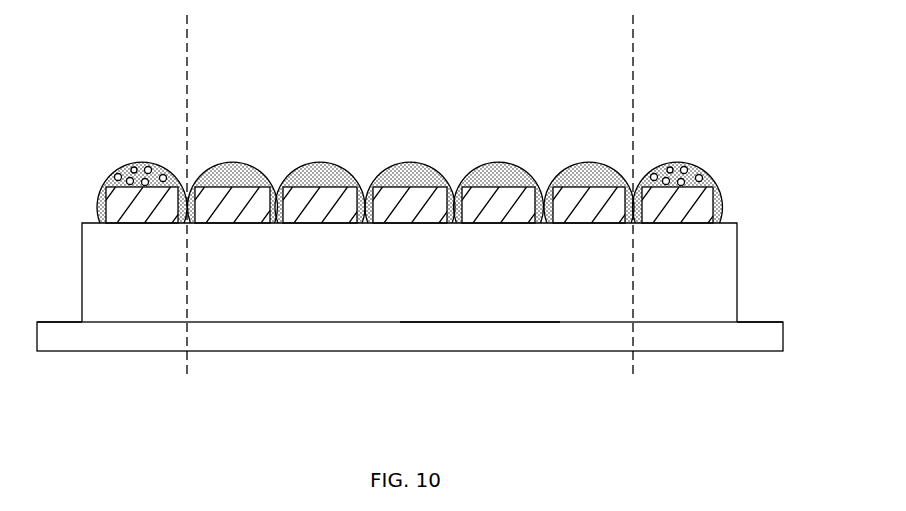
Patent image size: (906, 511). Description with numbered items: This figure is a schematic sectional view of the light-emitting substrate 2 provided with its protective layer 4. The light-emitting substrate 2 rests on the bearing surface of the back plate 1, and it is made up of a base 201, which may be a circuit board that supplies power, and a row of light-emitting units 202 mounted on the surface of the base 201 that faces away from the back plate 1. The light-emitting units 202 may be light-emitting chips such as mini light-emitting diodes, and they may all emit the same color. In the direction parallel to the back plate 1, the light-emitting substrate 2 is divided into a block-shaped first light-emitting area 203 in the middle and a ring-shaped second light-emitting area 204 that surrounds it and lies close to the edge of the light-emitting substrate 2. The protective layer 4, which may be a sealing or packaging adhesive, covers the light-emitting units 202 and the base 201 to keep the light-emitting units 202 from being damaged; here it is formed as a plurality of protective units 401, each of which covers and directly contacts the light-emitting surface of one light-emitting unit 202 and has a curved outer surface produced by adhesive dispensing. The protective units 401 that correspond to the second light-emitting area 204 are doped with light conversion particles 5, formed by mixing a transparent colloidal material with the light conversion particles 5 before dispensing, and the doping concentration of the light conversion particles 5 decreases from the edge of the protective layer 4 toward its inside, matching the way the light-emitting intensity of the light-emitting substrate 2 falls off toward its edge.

The back plate 1 is at (542, 337).
The light-emitting substrate 2 is at (327, 383).
The base 201 is at (335, 287).
The light-emitting unit 202 is at (223, 212).
The first light-emitting area 203 is at (477, 325).
The second light-emitting area 204 is at (111, 326).
The protective layer 4 is at (362, 223).
The protective unit 401 is at (156, 170).
The light conversion particles 5 is at (127, 187).